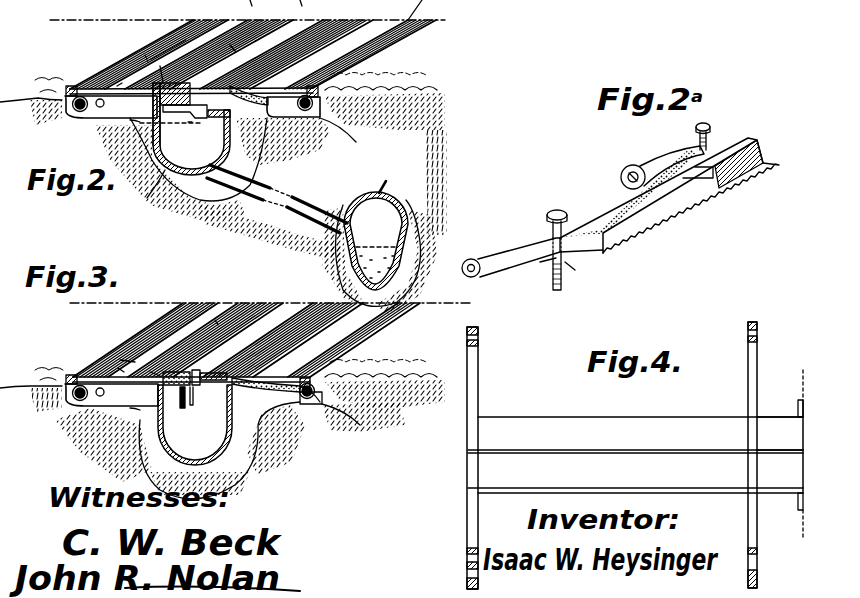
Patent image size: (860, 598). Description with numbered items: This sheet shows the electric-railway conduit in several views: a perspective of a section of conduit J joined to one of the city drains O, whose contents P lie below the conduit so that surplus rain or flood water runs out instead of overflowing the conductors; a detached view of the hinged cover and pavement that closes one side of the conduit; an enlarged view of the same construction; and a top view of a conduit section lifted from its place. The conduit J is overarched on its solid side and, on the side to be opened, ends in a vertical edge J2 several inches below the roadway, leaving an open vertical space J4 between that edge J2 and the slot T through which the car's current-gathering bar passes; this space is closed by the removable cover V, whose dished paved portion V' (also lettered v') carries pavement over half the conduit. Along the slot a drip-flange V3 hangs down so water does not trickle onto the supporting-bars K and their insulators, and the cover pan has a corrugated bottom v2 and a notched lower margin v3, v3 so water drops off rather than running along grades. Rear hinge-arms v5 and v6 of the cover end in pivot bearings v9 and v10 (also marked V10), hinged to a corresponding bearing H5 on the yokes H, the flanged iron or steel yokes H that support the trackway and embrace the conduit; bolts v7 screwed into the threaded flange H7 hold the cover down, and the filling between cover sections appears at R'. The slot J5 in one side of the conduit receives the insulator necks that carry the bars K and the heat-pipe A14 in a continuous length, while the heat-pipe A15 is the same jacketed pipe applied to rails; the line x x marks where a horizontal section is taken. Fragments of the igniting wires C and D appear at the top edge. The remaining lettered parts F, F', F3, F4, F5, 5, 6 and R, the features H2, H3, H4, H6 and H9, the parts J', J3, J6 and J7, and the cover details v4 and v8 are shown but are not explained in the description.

In FIG. 2, the electric wire D is at (245, 9).
In FIG. 2, the electric wire C is at (298, 9).
In FIG. 3, the roof boards F is at (246, 333).
In FIG. 3, the roof board F' is at (218, 304).
In FIG. 2, the roof board F3 is at (198, 32).
In FIG. 2, the roof board F4 is at (150, 58).
In FIG. 3, the roof board F5 is at (133, 360).
In FIG. 2, the fastener 5 is at (75, 40).
In FIG. 2, the fastener 6 is at (154, 73).
In FIG. 2, the roofing R is at (198, 64).
In FIG. 3, the filling of the cracks between cover sections R' is at (174, 355).
In FIG. 2, the removable cover V is at (227, 46).
In FIG. 3, the removable cover V is at (184, 404).
In FIG. 3, the dished paved portion of cover V' is at (149, 365).
In FIG. 3, the drip-flange V3 is at (194, 390).
In FIG. 2, the pivot bearing V10 is at (104, 107).
In FIG. 2, the yoke H is at (78, 99).
In FIG. 3, the yoke H is at (66, 392).
In FIG. 4, the yoke H is at (478, 390).
In FIG. 2, the bolt H3 is at (72, 104).
In FIG. 3, the bolt H3 is at (100, 430).
In FIG. 4, the bolt H3 is at (478, 343).
In FIG. 2, the hanger bracket H4 is at (282, 124).
In FIG. 3, the bracket H6 is at (218, 467).
In FIG. 3, the threaded flange H7 is at (147, 403).
In FIG. 2, the hook H9 is at (387, 125).
In FIG. 3, the hook H9 is at (75, 403).
In FIG. 4, the hanger end H2 is at (470, 329).
In FIG. 4, the bearing H5 is at (467, 550).
In FIG. 2, the heat-pipe A15 is at (92, 110).
In FIG. 3, the heat-pipe A15 is at (78, 400).
In FIG. 2, the heat-pipe A14 is at (136, 197).
In FIG. 2, the conduit J is at (216, 129).
In FIG. 4, the conduit J is at (635, 435).
In FIG. 2, the gutter flashing J' is at (238, 89).
In FIG. 3, the gutter flashing J' is at (250, 391).
In FIG. 4, the gutter flashing J' is at (780, 433).
In FIG. 2, the vertical edge of conduit J2 is at (164, 84).
In FIG. 2A, the vertical edge of conduit J2 is at (563, 267).
In FIG. 2, the down pipe J3 is at (305, 200).
In FIG. 4, the open vertical space J4 is at (635, 478).
In FIG. 2, the slot J5 is at (184, 91).
In FIG. 3, the slot J5 is at (195, 425).
In FIG. 4, the gutter end J6 is at (800, 400).
In FIG. 4, the gutter end J7 is at (800, 515).
In FIG. 2, the supporting-bar K is at (162, 133).
In FIG. 2, the section line x is at (161, 123).
In FIG. 2, the contents of drain P is at (376, 241).
In FIG. 2, the city drain O is at (388, 177).
In FIG. 4, the slot T is at (781, 446).
In FIG. 2A, the dished paved portion of cover v' is at (558, 215).
In FIG. 2A, the corrugated bottom of cover pan v2 is at (762, 143).
In FIG. 2A, the notched lower margin v3 is at (690, 205).
In FIG. 2A, the clamp screw v4 is at (610, 213).
In FIG. 2A, the hinge-arm v5 is at (650, 164).
In FIG. 2A, the hinge-arm v6 is at (535, 268).
In FIG. 2A, the bolt v7 is at (711, 123).
In FIG. 2A, the slot v8 is at (697, 152).
In FIG. 2A, the pivot bearing v9 is at (621, 174).
In FIG. 2A, the pivot bearing v10 is at (478, 255).